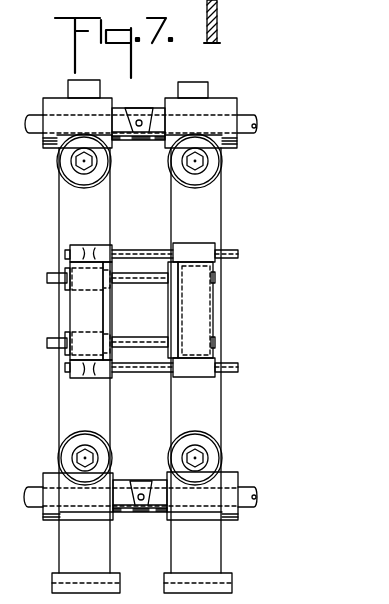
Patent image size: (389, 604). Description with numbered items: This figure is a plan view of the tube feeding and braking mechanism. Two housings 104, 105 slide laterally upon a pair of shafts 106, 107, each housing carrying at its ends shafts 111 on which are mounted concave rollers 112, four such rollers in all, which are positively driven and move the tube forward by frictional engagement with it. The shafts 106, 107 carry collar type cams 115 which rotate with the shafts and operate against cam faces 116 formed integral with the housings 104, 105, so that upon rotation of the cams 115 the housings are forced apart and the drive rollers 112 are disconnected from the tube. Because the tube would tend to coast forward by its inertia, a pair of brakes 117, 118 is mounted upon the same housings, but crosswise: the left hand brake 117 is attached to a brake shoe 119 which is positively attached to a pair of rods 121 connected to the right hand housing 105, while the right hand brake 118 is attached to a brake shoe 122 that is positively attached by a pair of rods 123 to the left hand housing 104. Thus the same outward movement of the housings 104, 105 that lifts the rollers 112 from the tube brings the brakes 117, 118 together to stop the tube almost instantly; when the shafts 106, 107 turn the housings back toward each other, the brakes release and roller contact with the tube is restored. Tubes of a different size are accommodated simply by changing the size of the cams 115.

The housing 104 is at (213, 222).
The housing 105 is at (68, 218).
The shaft 106 is at (247, 490).
The shaft 107 is at (245, 120).
The shaft 111 is at (180, 160).
The roller 112 is at (173, 170).
The collar type cam 115 is at (138, 108).
The cam face 116 is at (120, 110).
The brake 117 is at (172, 313).
The brake 118 is at (108, 313).
The brake shoe 119 is at (197, 330).
The rod 121 is at (47, 278).
The brake shoe 122 is at (77, 303).
The rod 123 is at (67, 254).